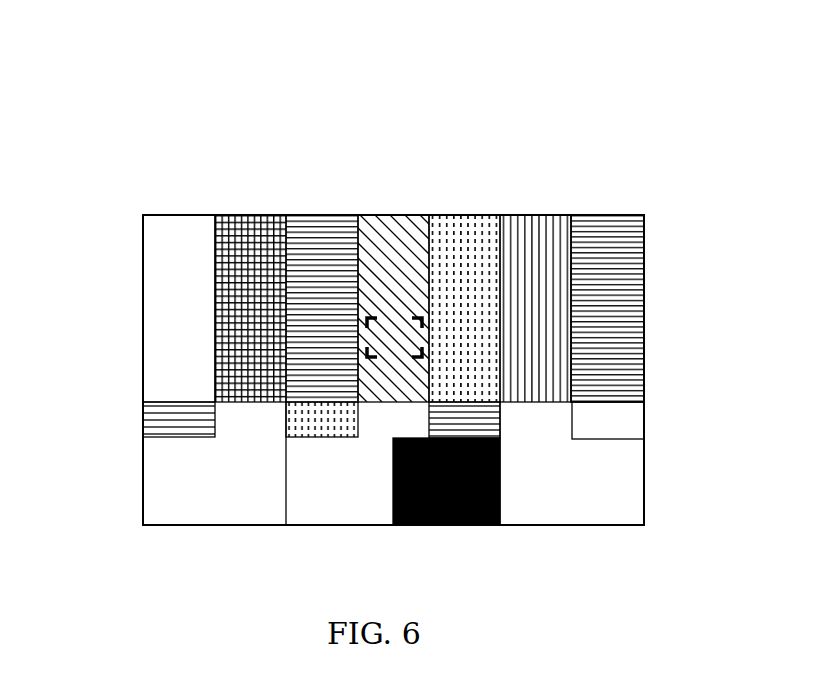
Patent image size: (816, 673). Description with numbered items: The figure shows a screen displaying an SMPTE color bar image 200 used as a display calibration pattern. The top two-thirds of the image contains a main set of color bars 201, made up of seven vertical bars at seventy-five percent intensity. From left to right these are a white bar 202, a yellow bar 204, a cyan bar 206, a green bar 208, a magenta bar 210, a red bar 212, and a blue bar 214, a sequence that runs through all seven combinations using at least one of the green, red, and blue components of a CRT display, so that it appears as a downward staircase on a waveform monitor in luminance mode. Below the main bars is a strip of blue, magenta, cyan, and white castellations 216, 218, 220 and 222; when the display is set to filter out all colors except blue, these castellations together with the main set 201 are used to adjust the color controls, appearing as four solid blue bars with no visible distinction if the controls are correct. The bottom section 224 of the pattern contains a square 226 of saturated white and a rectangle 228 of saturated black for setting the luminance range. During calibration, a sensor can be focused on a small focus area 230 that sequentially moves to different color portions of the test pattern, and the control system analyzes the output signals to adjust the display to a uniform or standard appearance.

The SMPTE color bar image 200 is at (138, 53).
The main set of color bars 201 is at (156, 350).
The white bar 202 is at (175, 262).
The yellow bar 204 is at (240, 245).
The cyan bar 206 is at (323, 247).
The green bar 208 is at (392, 247).
The magenta bar 210 is at (478, 235).
The red bar 212 is at (542, 243).
The blue bar 214 is at (612, 287).
The blue castellation 216 is at (177, 425).
The magenta castellation 218 is at (308, 422).
The cyan castellation 220 is at (482, 426).
The white castellation 222 is at (607, 423).
The bottom section 224 is at (298, 555).
The square of saturated white 226 is at (342, 507).
The rectangle of saturated black 228 is at (492, 527).
The focus area 230 is at (412, 317).